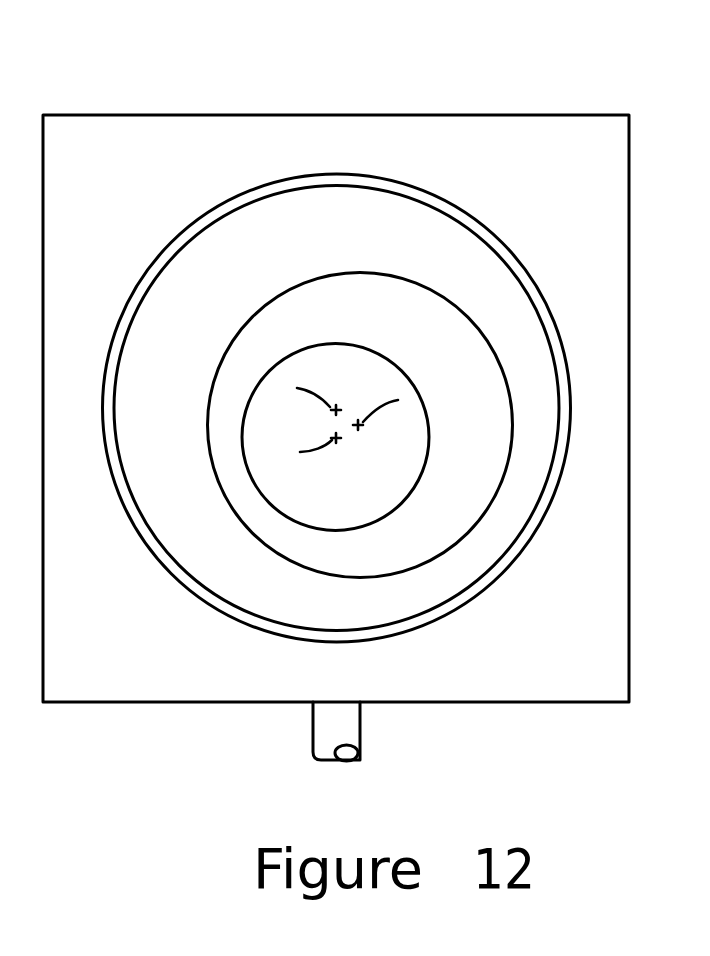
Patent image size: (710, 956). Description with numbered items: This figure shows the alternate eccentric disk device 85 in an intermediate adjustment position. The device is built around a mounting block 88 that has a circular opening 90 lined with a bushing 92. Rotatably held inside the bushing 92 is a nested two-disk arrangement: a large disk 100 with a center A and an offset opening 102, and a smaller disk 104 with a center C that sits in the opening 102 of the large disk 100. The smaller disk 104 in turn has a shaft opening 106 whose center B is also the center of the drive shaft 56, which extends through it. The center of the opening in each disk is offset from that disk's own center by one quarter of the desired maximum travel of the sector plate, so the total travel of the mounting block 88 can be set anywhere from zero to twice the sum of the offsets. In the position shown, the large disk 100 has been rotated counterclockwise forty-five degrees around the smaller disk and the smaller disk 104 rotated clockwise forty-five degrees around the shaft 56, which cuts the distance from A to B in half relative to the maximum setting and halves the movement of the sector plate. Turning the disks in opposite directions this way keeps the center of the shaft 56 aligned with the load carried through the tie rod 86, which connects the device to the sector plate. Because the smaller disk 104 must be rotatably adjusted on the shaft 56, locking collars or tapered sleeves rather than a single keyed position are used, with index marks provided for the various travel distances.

The alternate eccentric disk device 85 is at (348, 70).
The mounting block 88 is at (600, 175).
The bushing 92 is at (455, 218).
The circular opening 90 is at (515, 253).
The large disk 100 is at (488, 308).
The opening 102 is at (467, 535).
The smaller disk 104 is at (303, 312).
The shaft opening 106 is at (383, 357).
The drive shaft 56 is at (393, 443).
The tie rod 86 is at (360, 727).